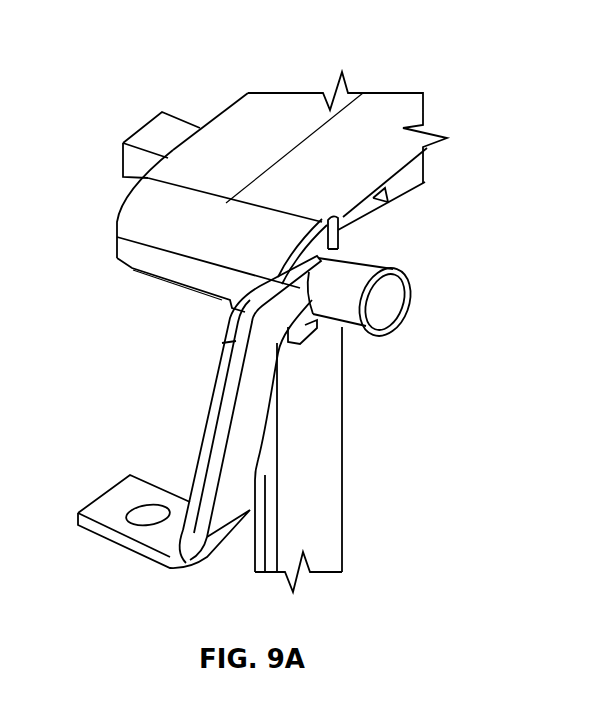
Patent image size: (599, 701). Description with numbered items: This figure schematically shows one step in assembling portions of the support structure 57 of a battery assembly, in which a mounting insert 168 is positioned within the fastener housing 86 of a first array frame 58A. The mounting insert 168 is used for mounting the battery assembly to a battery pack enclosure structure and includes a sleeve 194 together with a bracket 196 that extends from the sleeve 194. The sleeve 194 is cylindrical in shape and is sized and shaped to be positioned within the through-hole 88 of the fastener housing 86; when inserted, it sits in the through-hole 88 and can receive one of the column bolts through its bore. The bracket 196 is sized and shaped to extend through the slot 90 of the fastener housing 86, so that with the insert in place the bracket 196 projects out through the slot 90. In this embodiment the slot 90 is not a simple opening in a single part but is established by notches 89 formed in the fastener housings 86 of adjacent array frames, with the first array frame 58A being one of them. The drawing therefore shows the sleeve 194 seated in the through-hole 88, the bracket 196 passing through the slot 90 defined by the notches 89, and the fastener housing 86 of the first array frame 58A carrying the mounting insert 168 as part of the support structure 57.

The support structure 57 is at (312, 82).
The first array frame 58A is at (398, 103).
The fastener housing 86 is at (247, 247).
The through-hole 88 is at (343, 238).
The notches 89 is at (322, 222).
The slot 90 is at (328, 204).
The mounting insert 168 is at (217, 388).
The sleeve 194 is at (365, 268).
The bracket 196 is at (250, 420).